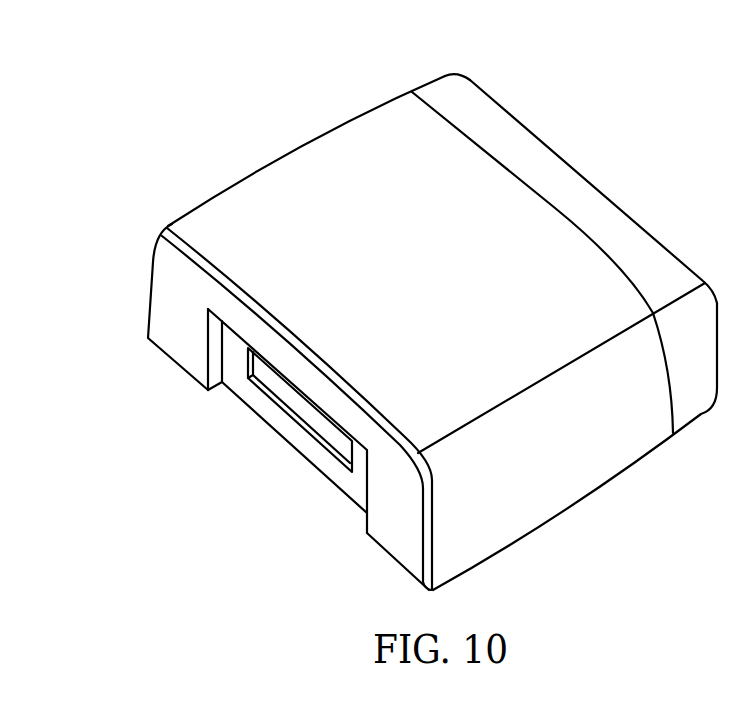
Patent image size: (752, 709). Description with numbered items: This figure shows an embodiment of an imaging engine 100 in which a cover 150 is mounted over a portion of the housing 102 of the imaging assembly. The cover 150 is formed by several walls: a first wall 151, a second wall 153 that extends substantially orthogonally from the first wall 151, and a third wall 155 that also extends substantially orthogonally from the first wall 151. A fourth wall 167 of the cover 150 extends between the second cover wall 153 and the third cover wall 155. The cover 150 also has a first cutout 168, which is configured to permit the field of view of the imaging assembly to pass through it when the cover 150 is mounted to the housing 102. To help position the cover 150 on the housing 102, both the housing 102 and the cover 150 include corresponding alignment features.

The imaging engine 100 is at (117, 72).
The housing 102 is at (298, 442).
The cover 150 is at (580, 188).
The first wall 151 is at (222, 231).
The second wall 153 is at (288, 142).
The third wall 155 is at (562, 462).
The fourth wall 167 is at (188, 322).
The first cutout 168 is at (228, 413).